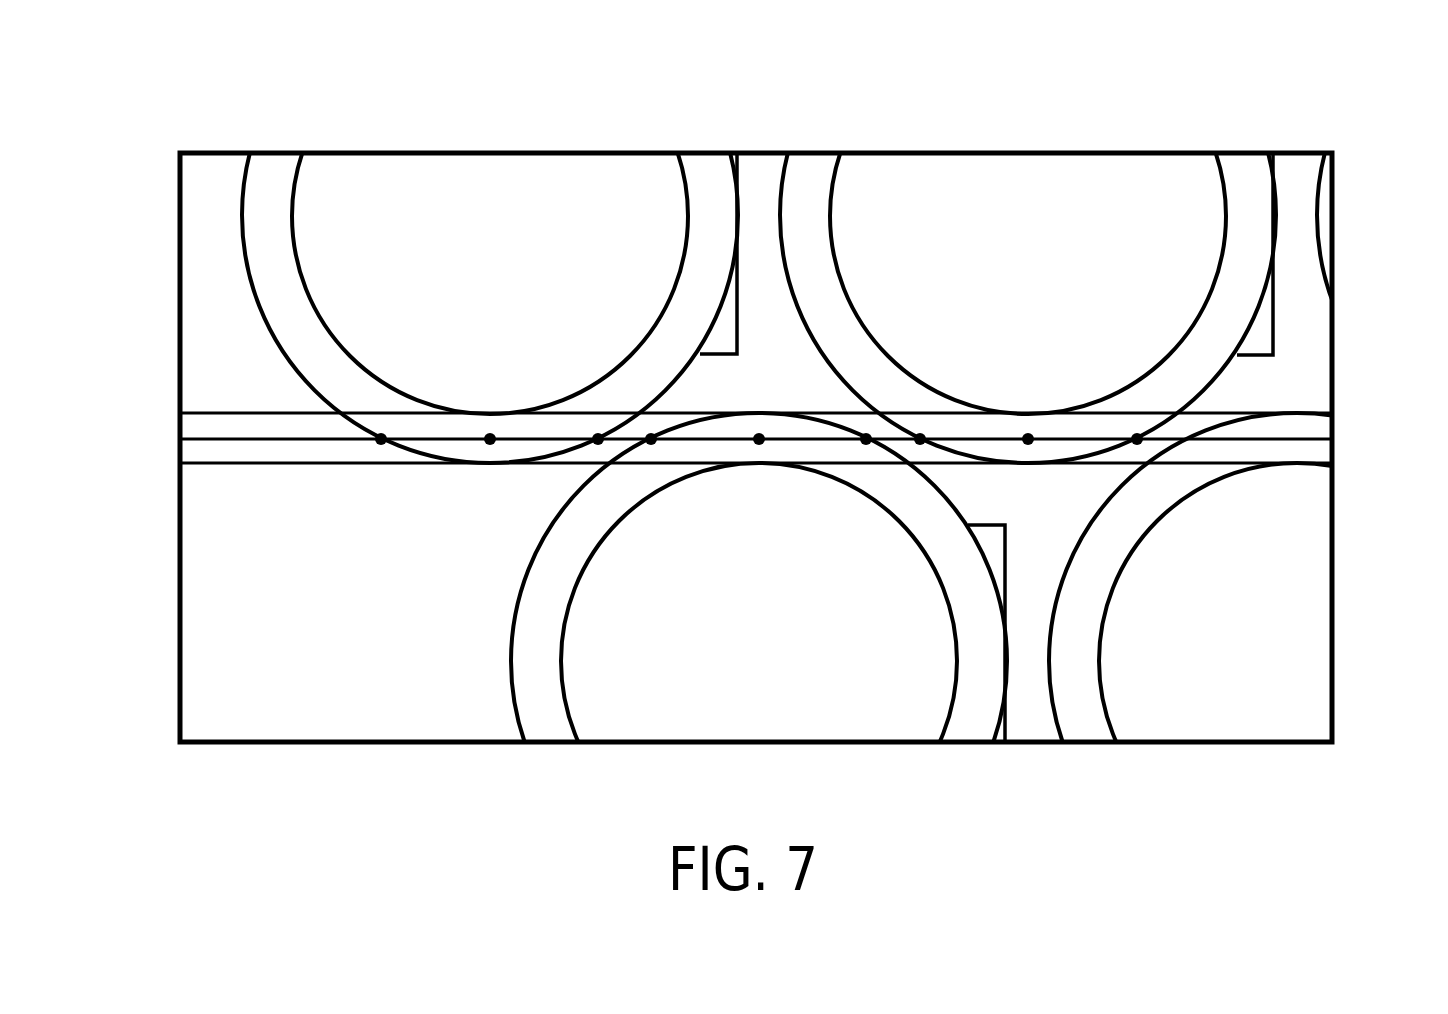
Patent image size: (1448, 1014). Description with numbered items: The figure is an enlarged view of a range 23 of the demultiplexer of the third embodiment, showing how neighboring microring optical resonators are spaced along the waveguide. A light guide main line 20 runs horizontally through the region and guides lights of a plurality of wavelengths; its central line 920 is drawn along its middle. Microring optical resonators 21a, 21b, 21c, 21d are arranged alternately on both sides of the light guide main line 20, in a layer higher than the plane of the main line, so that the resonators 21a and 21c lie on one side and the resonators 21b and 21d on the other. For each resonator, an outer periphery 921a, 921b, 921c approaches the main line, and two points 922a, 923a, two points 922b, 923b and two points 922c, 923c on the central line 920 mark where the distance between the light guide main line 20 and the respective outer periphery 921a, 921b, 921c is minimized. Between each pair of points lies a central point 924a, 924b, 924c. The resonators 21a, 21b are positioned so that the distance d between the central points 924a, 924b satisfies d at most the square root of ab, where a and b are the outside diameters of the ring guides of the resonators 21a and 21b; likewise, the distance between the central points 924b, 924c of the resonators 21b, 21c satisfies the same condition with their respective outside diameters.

The range 23 is at (1332, 585).
The light guide main line 20 is at (270, 463).
The central line 920 is at (194, 434).
The outer periphery 921a is at (246, 178).
The outer periphery 921b is at (514, 700).
The outer periphery 921c is at (782, 180).
The microring optical resonator 21a is at (296, 225).
The microring optical resonator 21b is at (562, 658).
The microring optical resonator 21c is at (833, 225).
The microring optical resonator 21d is at (1100, 658).
The point 922a is at (381, 439).
The point 923a is at (598, 439).
The central point 924a is at (490, 439).
The point 922b is at (651, 439).
The point 923b is at (866, 439).
The central point 924b is at (759, 439).
The point 922c is at (920, 439).
The point 923c is at (1137, 439).
The central point 924c is at (1028, 439).